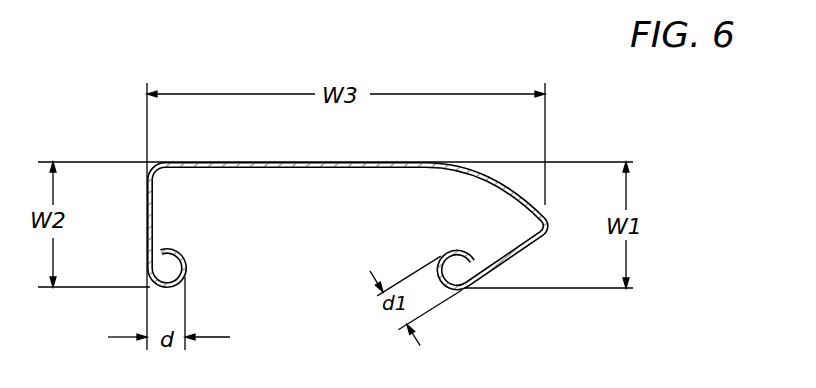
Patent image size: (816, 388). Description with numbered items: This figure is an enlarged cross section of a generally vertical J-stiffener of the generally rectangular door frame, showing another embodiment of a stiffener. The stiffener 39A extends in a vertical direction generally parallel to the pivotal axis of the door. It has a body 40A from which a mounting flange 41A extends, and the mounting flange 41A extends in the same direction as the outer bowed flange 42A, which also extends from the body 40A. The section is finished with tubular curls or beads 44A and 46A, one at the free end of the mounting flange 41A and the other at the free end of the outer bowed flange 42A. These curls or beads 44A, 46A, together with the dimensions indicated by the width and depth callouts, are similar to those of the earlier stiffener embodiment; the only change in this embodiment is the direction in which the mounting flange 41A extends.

The stiffener 39A is at (337, 187).
The body 40A is at (260, 161).
The mounting flange 41A is at (146, 234).
The outer bowed flange 42A is at (516, 186).
The tubular curl or bead 44A is at (185, 262).
The tubular curl or bead 46A is at (452, 252).